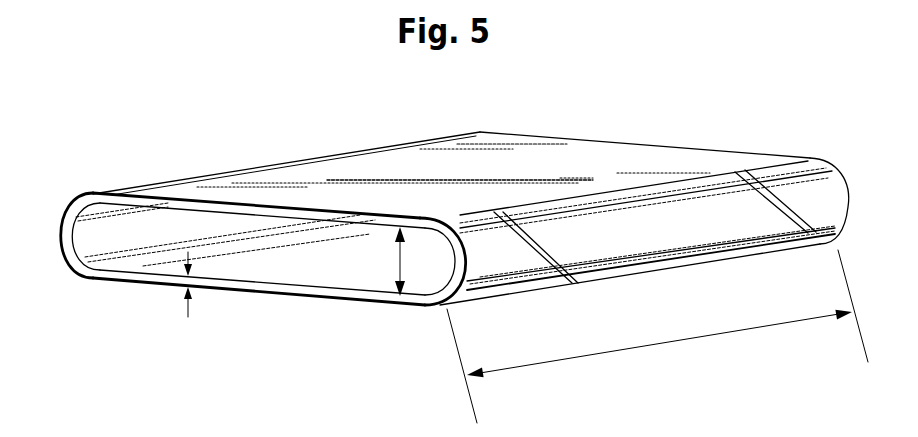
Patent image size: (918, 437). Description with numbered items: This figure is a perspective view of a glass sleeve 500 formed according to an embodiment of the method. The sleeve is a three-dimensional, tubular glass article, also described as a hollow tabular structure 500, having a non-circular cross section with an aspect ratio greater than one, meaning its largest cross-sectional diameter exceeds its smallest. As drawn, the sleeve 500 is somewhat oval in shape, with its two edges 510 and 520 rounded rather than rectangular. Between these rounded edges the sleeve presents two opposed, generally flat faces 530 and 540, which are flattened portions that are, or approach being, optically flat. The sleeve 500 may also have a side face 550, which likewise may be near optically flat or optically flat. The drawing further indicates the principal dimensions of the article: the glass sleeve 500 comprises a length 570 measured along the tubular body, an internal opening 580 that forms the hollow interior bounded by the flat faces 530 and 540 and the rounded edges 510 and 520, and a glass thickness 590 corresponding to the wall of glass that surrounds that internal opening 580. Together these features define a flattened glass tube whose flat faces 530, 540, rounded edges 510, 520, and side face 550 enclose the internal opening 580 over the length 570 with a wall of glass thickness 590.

The glass sleeve 500 is at (722, 115).
The edge 510 is at (467, 265).
The edge 520 is at (60, 236).
The flat face 530 is at (334, 211).
The flat face 540 is at (260, 296).
The side face 550 is at (625, 232).
The length 570 is at (672, 341).
The internal opening 580 is at (398, 258).
The glass thickness 590 is at (188, 308).